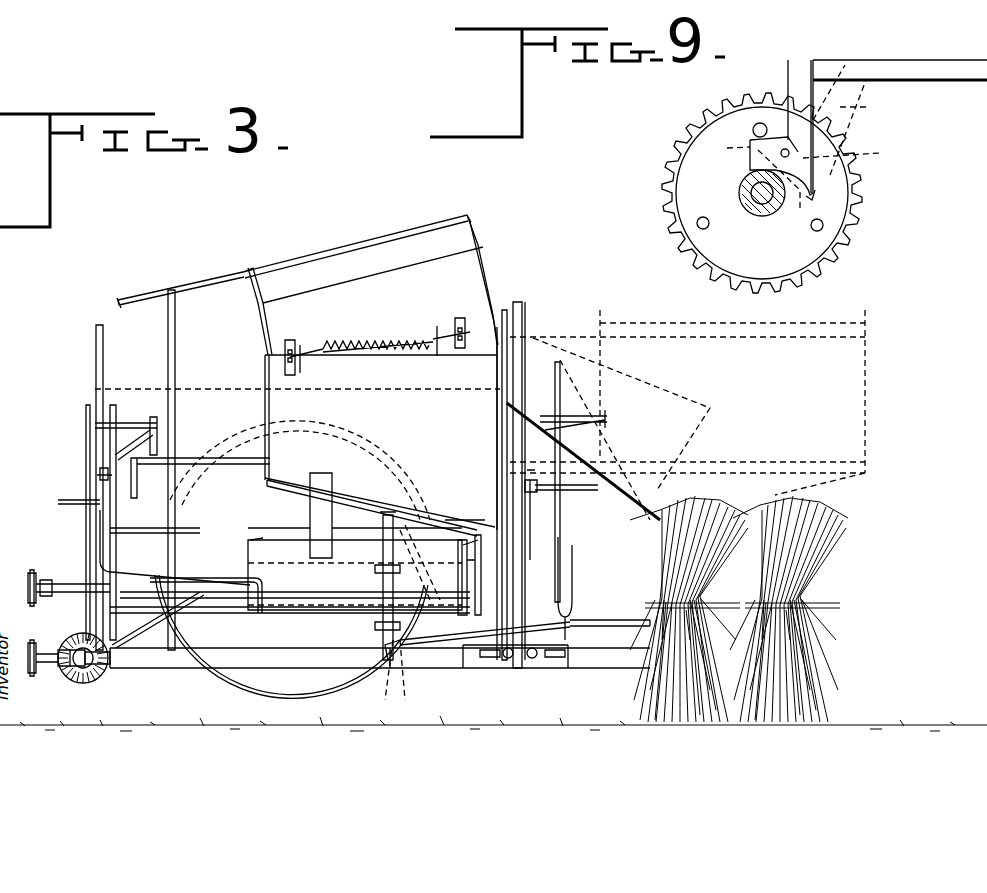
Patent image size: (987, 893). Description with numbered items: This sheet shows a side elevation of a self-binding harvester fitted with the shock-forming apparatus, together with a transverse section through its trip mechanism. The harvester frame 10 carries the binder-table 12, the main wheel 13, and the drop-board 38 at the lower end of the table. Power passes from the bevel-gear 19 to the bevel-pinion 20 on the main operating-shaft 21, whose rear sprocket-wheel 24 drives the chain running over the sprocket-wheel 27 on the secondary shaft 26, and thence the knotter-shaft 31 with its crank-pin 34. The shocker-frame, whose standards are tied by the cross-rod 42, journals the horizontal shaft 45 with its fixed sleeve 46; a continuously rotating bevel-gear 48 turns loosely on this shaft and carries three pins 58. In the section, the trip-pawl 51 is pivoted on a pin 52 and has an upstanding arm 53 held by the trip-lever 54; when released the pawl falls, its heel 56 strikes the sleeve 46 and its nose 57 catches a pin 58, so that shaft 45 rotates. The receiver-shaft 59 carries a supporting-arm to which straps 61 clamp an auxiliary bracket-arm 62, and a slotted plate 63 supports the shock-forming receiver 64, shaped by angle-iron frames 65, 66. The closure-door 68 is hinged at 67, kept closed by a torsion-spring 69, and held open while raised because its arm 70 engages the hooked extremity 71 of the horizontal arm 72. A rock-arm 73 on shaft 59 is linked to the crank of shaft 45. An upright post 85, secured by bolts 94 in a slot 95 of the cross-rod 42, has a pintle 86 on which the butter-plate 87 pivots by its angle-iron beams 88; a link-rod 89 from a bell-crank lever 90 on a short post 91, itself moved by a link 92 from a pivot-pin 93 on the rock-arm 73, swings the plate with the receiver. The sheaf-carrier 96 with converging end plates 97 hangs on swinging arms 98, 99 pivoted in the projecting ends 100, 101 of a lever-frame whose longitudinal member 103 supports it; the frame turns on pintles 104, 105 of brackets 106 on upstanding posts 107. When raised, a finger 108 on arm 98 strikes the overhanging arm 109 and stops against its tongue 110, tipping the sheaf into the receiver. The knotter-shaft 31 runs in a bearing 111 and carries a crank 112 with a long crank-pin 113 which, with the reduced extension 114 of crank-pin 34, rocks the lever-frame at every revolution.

In FIG. 3, the frame 10 is at (96, 343).
In FIG. 3, the binder-table 12 is at (209, 395).
In FIG. 3, the main wheel 13 is at (370, 727).
In FIG. 3, the bevel-gear 19 is at (88, 683).
In FIG. 3, the bevel-pinion 20 is at (62, 675).
In FIG. 3, the main operating-shaft 21 is at (105, 670).
In FIG. 3, the sprocket-wheel 24 is at (32, 676).
In FIG. 3, the secondary shaft 26 is at (210, 598).
In FIG. 3, the sprocket-wheel 27 is at (32, 572).
In FIG. 3, the knotter-shaft 31 is at (210, 470).
In FIG. 3, the crank-pin 34 is at (537, 515).
In FIG. 3, the drop-board 38 is at (215, 540).
In FIG. 3, the cross-rod 42 is at (425, 668).
In FIG. 9, the horizontal shaft 45 is at (752, 210).
In FIG. 9, the sleeve 46 is at (772, 205).
In FIG. 9, the bevel-gear 48 is at (690, 165).
In FIG. 9, the trip-pawl 51 is at (801, 150).
In FIG. 9, the pin 52 is at (782, 150).
In FIG. 9, the upstanding arm 53 is at (800, 75).
In FIG. 9, the trip-lever 54 is at (950, 62).
In FIG. 9, the heel 56 is at (816, 192).
In FIG. 9, the nose 57 is at (748, 162).
In FIG. 9, the pins 58 is at (697, 227).
In FIG. 3, the shaft 59 is at (385, 660).
In FIG. 3, the straps 61 is at (375, 570).
In FIG. 3, the auxiliary bracket-arm 62 is at (300, 490).
In FIG. 3, the plate 63 is at (345, 470).
In FIG. 3, the shock-forming receiver 64 is at (398, 385).
In FIG. 3, the angle-iron frame 65 is at (265, 408).
In FIG. 3, the angle-iron frame 66 is at (495, 290).
In FIG. 3, the hinge 67 is at (296, 372).
In FIG. 3, the closure-door 68 is at (325, 270).
In FIG. 3, the torsion-spring 69 is at (372, 347).
In FIG. 3, the arm 70 is at (212, 272).
In FIG. 3, the hooked extremity 71 is at (150, 295).
In FIG. 3, the horizontally-extending arm 72 is at (168, 338).
In FIG. 3, the rock-arm 73 is at (400, 658).
In FIG. 3, the upright post 85 is at (519, 668).
In FIG. 3, the pintle 86 is at (520, 305).
In FIG. 3, the butter-plate 87 is at (500, 395).
In FIG. 3, the angle-iron beams 88 is at (525, 335).
In FIG. 3, the link-rod 89 is at (650, 480).
In FIG. 3, the bell-crank lever 90 is at (515, 400).
In FIG. 3, the upright post 91 is at (580, 628).
In FIG. 3, the link 92 is at (463, 668).
In FIG. 3, the pivot-pin 93 is at (385, 655).
In FIG. 3, the bolts 94 is at (508, 658).
In FIG. 3, the slot 95 is at (565, 657).
In FIG. 3, the sheaf-carrier 96 is at (355, 569).
In FIG. 3, the end plates 97 is at (222, 540).
In FIG. 3, the swinging arm 98 is at (195, 578).
In FIG. 3, the swinging arm 99 is at (435, 560).
In FIG. 3, the projecting end 100 is at (115, 570).
In FIG. 3, the projecting end 101 is at (483, 550).
In FIG. 3, the longitudinal member 103 is at (180, 600).
In FIG. 3, the pintle 104 is at (122, 420).
In FIG. 3, the pintle 105 is at (585, 412).
In FIG. 3, the brackets 106 is at (162, 420).
In FIG. 3, the upstanding posts 107 is at (565, 538).
In FIG. 3, the finger 108 is at (60, 500).
In FIG. 3, the overhanging arm 109 is at (86, 410).
In FIG. 3, the tongue 110 is at (86, 446).
In FIG. 3, the bearing 111 is at (165, 530).
In FIG. 3, the crank 112 is at (140, 483).
In FIG. 3, the crank-pin 113 is at (100, 476).
In FIG. 3, the reduced extension 114 is at (580, 492).